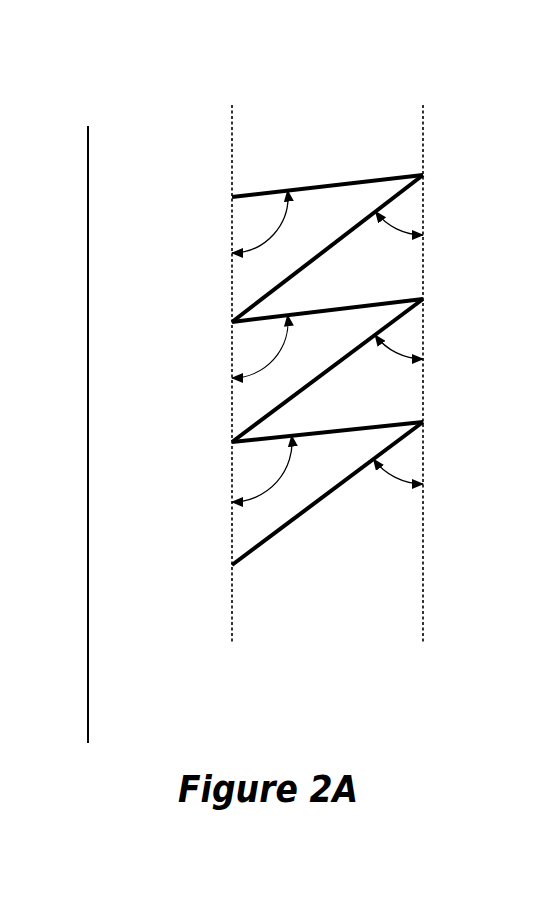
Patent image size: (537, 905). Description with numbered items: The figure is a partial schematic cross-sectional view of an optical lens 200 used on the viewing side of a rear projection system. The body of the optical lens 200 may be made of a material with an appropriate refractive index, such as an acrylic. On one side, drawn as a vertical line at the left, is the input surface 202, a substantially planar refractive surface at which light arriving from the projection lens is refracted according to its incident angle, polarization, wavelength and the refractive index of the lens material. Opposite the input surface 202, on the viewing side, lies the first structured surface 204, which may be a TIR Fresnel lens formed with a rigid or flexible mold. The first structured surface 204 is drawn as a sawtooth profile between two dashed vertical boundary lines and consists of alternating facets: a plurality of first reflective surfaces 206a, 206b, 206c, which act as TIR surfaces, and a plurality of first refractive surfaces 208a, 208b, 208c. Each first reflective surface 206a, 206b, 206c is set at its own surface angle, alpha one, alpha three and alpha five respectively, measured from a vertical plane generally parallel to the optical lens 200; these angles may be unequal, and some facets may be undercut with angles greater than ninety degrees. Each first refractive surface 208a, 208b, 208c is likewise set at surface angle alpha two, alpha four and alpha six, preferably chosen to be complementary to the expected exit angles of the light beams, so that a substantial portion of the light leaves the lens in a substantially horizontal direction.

The optical lens 200 is at (199, 68).
The input surface 202 is at (87, 152).
The first structured surface 204 is at (371, 118).
The first reflective surface 206a is at (247, 197).
The first reflective surface 206b is at (248, 320).
The first reflective surface 206c is at (248, 441).
The first refractive surface 208a is at (315, 259).
The first refractive surface 208b is at (311, 386).
The first refractive surface 208c is at (294, 521).